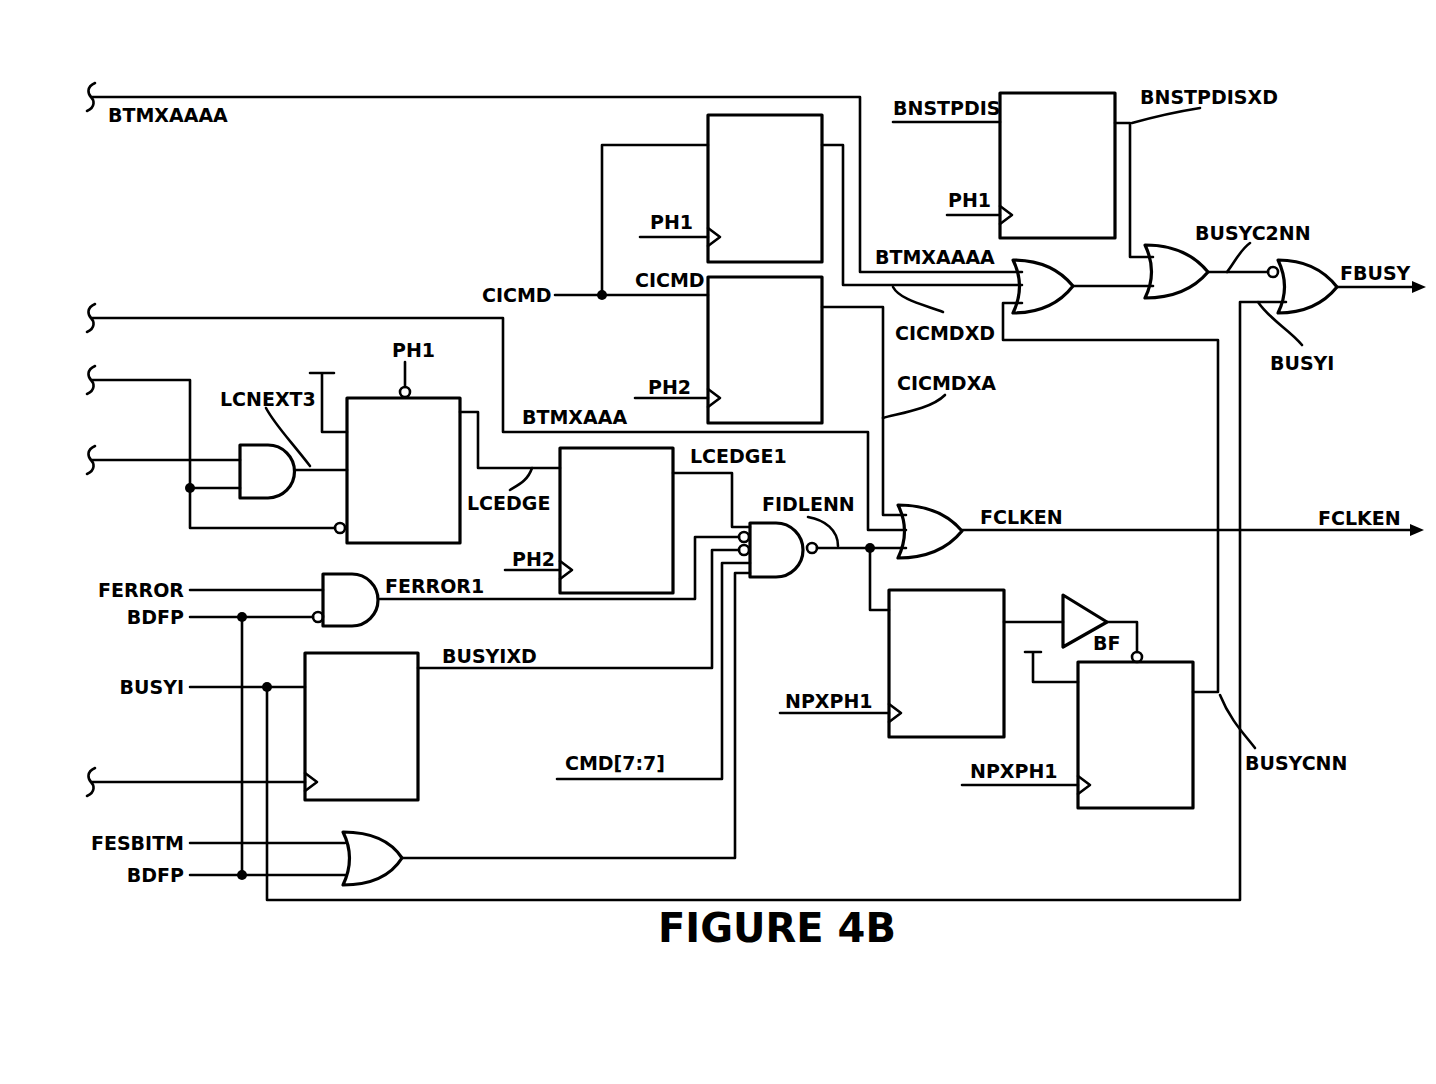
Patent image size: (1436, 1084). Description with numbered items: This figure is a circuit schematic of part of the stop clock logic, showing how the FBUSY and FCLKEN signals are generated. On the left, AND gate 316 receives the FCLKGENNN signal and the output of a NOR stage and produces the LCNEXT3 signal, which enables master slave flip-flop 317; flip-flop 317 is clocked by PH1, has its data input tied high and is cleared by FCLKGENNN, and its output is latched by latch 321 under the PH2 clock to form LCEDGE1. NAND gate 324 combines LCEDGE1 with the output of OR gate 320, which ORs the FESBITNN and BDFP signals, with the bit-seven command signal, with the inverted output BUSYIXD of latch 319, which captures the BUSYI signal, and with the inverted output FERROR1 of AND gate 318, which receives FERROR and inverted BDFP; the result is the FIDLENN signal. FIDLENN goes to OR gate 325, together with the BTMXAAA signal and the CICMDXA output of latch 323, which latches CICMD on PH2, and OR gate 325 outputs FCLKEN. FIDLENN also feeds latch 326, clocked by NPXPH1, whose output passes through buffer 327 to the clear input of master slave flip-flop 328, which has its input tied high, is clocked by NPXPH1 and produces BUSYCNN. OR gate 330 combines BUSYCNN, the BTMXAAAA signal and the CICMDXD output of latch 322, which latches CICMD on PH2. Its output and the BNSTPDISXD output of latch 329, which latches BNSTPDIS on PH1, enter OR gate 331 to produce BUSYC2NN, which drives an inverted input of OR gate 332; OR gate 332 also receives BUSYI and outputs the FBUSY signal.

The AND gate 316 is at (246, 484).
The master slave flip-flop 317 is at (409, 507).
The AND gate 318 is at (327, 613).
The latch 319 is at (344, 759).
The OR gate 320 is at (350, 870).
The latch 321 is at (599, 564).
The latch 322 is at (749, 232).
The latch 323 is at (749, 392).
The NAND gate 324 is at (755, 560).
The OR gate 325 is at (912, 542).
The latch 326 is at (930, 709).
The buffer 327 is at (1073, 602).
The master slave flip-flop 328 is at (1120, 780).
The latch 329 is at (1042, 210).
The OR gate 330 is at (1025, 298).
The OR gate 331 is at (1158, 284).
The OR gate 332 is at (1289, 299).